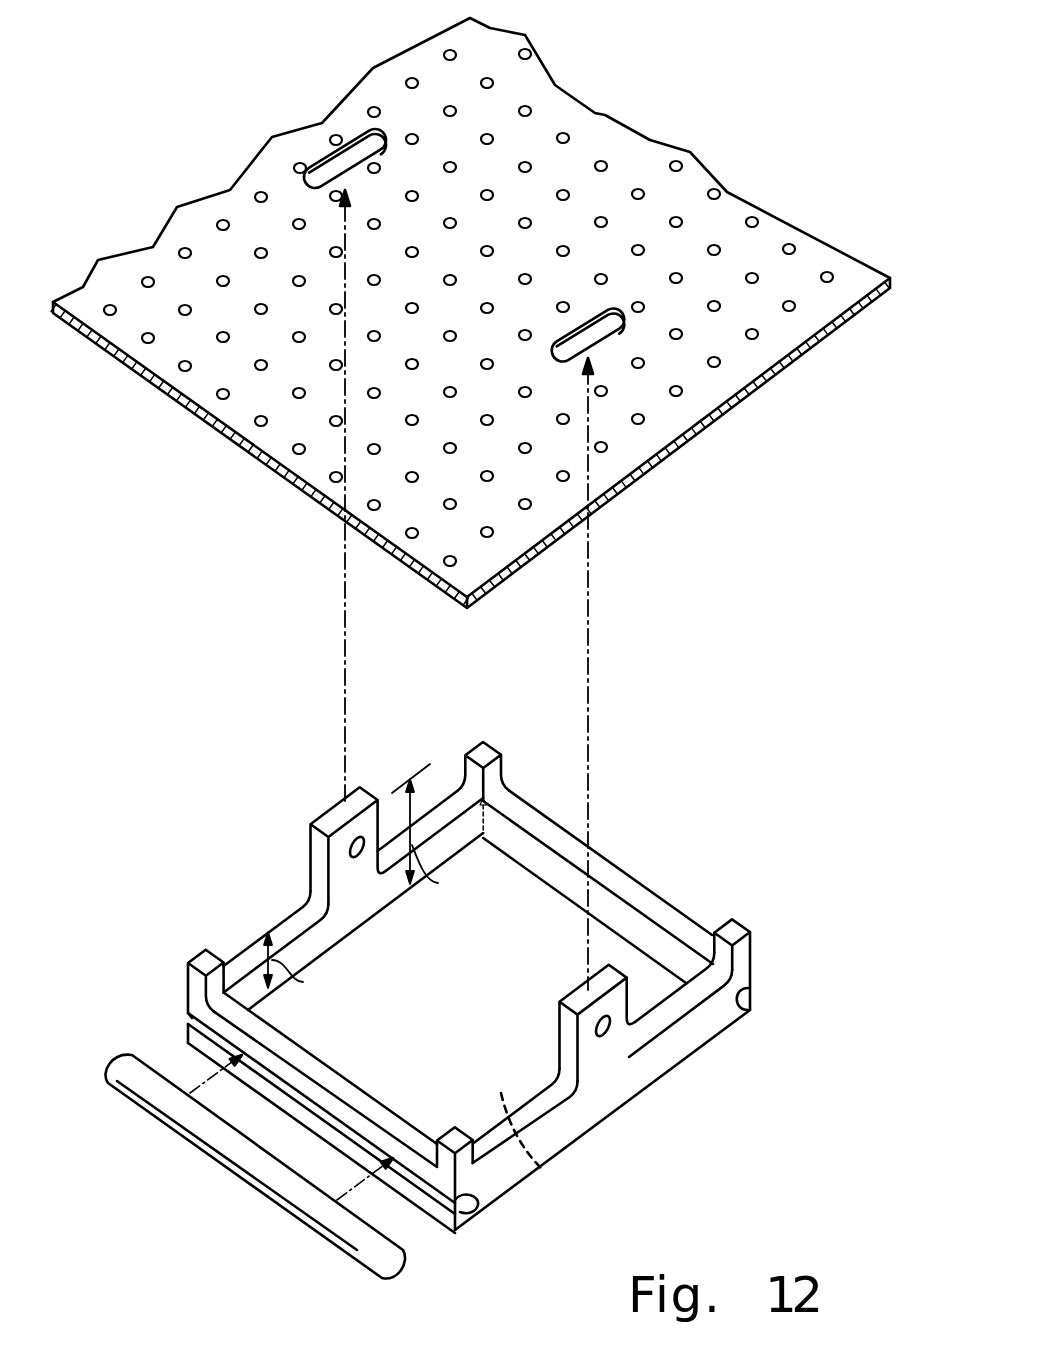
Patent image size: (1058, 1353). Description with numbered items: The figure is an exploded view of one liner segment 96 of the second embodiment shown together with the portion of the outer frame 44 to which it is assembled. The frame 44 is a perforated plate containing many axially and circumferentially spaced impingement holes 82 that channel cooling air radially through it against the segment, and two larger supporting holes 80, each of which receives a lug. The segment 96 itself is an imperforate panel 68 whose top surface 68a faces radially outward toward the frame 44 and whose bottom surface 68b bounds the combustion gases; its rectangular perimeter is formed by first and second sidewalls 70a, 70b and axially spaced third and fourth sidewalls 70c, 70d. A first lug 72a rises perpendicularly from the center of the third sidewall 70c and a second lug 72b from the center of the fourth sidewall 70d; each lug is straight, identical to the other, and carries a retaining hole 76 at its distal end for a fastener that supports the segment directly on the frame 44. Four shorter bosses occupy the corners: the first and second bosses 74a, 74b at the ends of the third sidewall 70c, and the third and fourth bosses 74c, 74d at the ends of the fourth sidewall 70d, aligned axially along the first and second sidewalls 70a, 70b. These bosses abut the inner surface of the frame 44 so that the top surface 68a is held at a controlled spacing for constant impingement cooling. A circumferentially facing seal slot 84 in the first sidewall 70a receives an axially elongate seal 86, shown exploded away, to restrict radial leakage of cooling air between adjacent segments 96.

The outer frame 44 is at (658, 142).
The impingement holes 82 is at (790, 246).
The supporting holes 80 is at (616, 334).
The liner segments 96 is at (651, 822).
The imperforate panel 68 is at (458, 986).
The top surface 68a is at (437, 1017).
The bottom surface 68b is at (540, 1170).
The first sidewall 70a is at (440, 1222).
The second sidewall 70b is at (748, 1004).
The third sidewall 70c is at (292, 912).
The fourth sidewall 70d is at (642, 1066).
The first lug 72a is at (314, 818).
The second lug 72b is at (570, 998).
The first boss 74a is at (200, 950).
The second boss 74b is at (487, 748).
The third boss 74c is at (454, 1124).
The fourth boss 74d is at (757, 906).
The retaining hole 76 is at (346, 858).
The seal slot 84 is at (474, 1209).
The seal 86 is at (256, 1188).